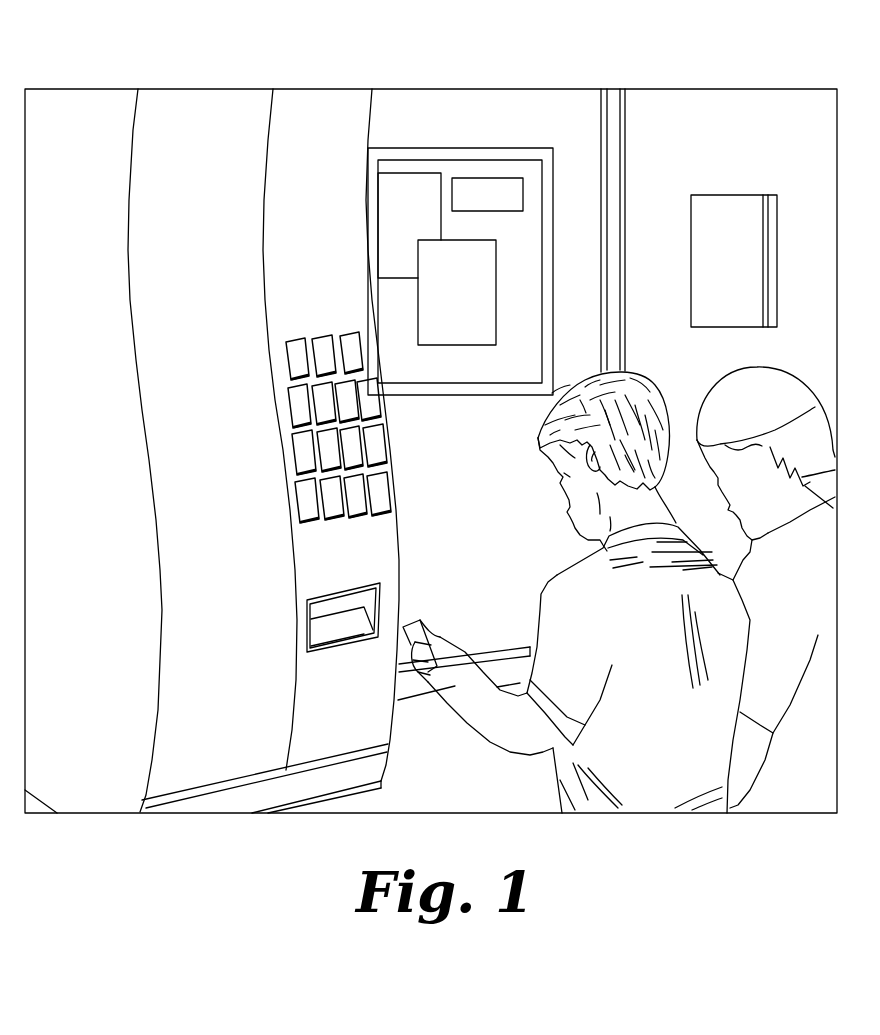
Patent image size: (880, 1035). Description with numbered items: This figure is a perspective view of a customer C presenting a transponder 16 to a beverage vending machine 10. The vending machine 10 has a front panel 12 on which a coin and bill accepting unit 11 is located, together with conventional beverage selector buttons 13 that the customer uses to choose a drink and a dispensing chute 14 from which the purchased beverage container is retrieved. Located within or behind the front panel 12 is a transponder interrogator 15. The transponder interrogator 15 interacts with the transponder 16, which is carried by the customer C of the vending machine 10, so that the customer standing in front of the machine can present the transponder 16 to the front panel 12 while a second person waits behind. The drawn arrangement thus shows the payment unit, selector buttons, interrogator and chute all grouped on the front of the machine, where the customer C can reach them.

The beverage vending machine 10 is at (344, 83).
The coin and bill accepting unit 11 is at (390, 357).
The front panel 12 is at (379, 218).
The beverage selector buttons 13 is at (388, 404).
The dispensing chute 14 is at (365, 597).
The transponder interrogator 15 is at (359, 348).
The transponder 16 is at (428, 672).
The customer C is at (640, 380).